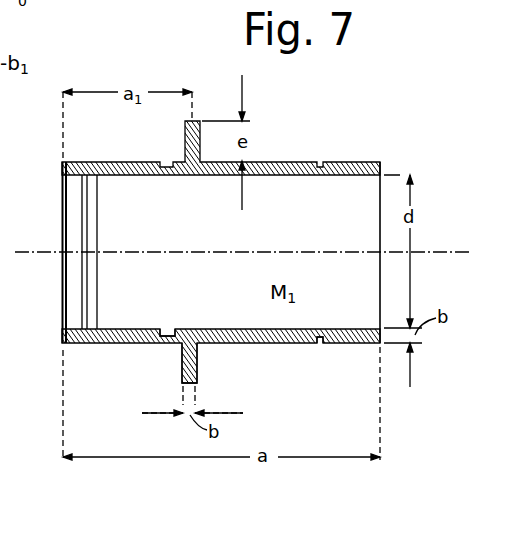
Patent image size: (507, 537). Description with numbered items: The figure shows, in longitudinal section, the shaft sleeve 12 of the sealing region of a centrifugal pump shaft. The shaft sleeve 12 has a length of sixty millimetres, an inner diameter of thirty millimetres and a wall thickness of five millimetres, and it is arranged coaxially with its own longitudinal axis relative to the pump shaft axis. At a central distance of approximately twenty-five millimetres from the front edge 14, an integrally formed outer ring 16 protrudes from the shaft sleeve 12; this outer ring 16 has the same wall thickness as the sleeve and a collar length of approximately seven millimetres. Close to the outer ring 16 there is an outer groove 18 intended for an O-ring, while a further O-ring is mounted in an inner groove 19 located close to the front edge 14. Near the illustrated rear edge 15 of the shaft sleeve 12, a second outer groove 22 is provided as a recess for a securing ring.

The shaft sleeve 12 is at (301, 149).
The front edge 14 is at (62, 303).
The rear edge 15 is at (380, 212).
The outer ring 16 is at (198, 366).
The outer groove 18 is at (167, 339).
The inner groove 19 is at (90, 236).
The second outer groove 22 is at (319, 343).